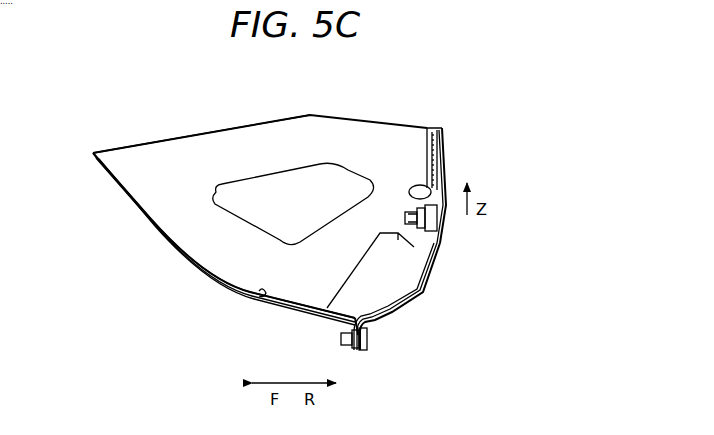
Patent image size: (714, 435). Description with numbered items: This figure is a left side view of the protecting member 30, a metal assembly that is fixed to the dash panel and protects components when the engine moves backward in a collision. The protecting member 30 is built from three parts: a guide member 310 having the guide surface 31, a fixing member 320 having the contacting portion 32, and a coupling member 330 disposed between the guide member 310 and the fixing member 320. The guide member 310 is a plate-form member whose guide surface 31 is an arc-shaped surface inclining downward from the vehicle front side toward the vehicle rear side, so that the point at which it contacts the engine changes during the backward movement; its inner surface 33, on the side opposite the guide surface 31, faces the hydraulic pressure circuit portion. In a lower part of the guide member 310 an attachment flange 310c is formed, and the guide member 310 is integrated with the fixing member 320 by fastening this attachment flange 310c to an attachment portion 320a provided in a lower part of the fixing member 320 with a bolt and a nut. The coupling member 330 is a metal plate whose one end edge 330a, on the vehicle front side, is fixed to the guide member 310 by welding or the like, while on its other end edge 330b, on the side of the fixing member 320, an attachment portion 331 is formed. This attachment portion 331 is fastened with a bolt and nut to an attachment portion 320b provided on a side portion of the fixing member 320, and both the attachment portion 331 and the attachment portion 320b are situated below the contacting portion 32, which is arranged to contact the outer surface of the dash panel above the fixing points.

The protecting member 30 is at (187, 127).
The guide surface 31 is at (180, 250).
The contacting portion 32 is at (446, 160).
The inner surface 33 is at (263, 296).
The guide member 310 is at (114, 184).
The attachment flange 310c is at (350, 322).
The fixing member 320 is at (439, 262).
The attachment portion 320a is at (364, 323).
The attachment portion 320b is at (438, 240).
The coupling member 330 is at (291, 112).
The one end edge 330a is at (147, 200).
The other end edge 330b is at (410, 136).
The attachment portion 331 is at (400, 239).